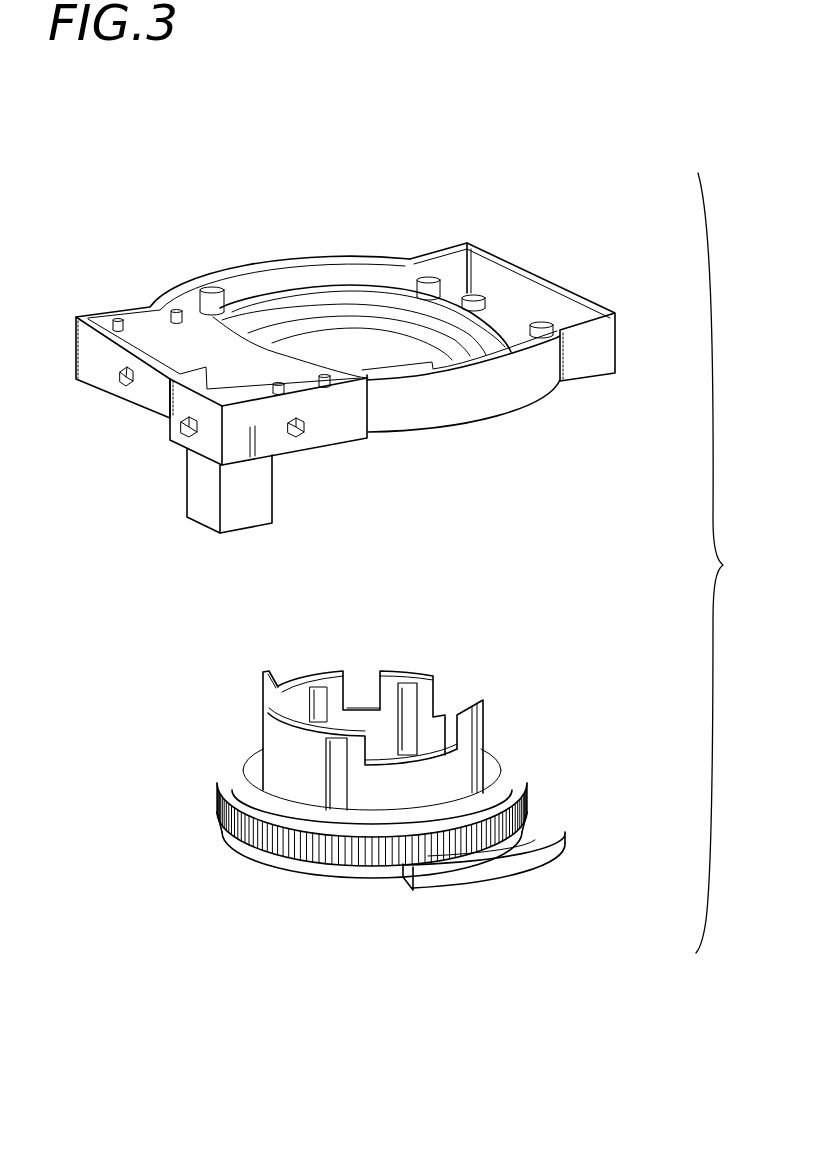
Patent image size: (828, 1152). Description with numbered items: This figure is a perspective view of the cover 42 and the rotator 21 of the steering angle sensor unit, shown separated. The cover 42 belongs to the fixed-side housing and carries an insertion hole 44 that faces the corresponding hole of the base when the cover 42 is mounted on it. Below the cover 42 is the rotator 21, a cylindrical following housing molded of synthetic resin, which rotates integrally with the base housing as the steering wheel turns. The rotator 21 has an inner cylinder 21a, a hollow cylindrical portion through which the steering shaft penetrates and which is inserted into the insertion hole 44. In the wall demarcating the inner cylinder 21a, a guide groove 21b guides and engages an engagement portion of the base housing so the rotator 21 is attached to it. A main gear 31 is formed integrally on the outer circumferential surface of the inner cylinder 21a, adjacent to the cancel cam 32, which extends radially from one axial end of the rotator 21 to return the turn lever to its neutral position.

The cover 42 is at (533, 268).
The insertion hole 44 is at (337, 325).
The rotator 21 is at (375, 703).
The inner cylinder 21a is at (263, 743).
The guide groove 21b is at (410, 694).
The main gear 31 is at (527, 788).
The cancel cam 32 is at (541, 876).